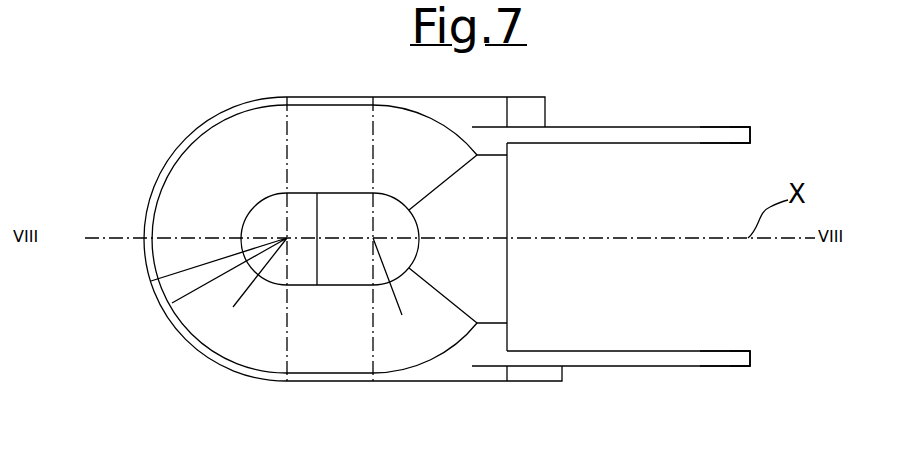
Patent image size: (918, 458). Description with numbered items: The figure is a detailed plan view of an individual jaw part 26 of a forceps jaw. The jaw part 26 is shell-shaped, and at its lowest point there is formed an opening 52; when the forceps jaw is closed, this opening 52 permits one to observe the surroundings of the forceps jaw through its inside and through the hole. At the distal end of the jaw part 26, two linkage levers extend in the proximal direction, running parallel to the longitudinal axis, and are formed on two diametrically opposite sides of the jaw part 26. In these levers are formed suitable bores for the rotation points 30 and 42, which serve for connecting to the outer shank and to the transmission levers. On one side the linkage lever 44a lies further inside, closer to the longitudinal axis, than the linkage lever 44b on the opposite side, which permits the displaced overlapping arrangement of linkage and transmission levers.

The jaw part 26 is at (303, 97).
The rotation point 30 is at (590, 133).
The rotation point 42 is at (710, 133).
The linkage lever 44a is at (730, 128).
The linkage lever 44b is at (733, 368).
The opening 52 is at (347, 281).